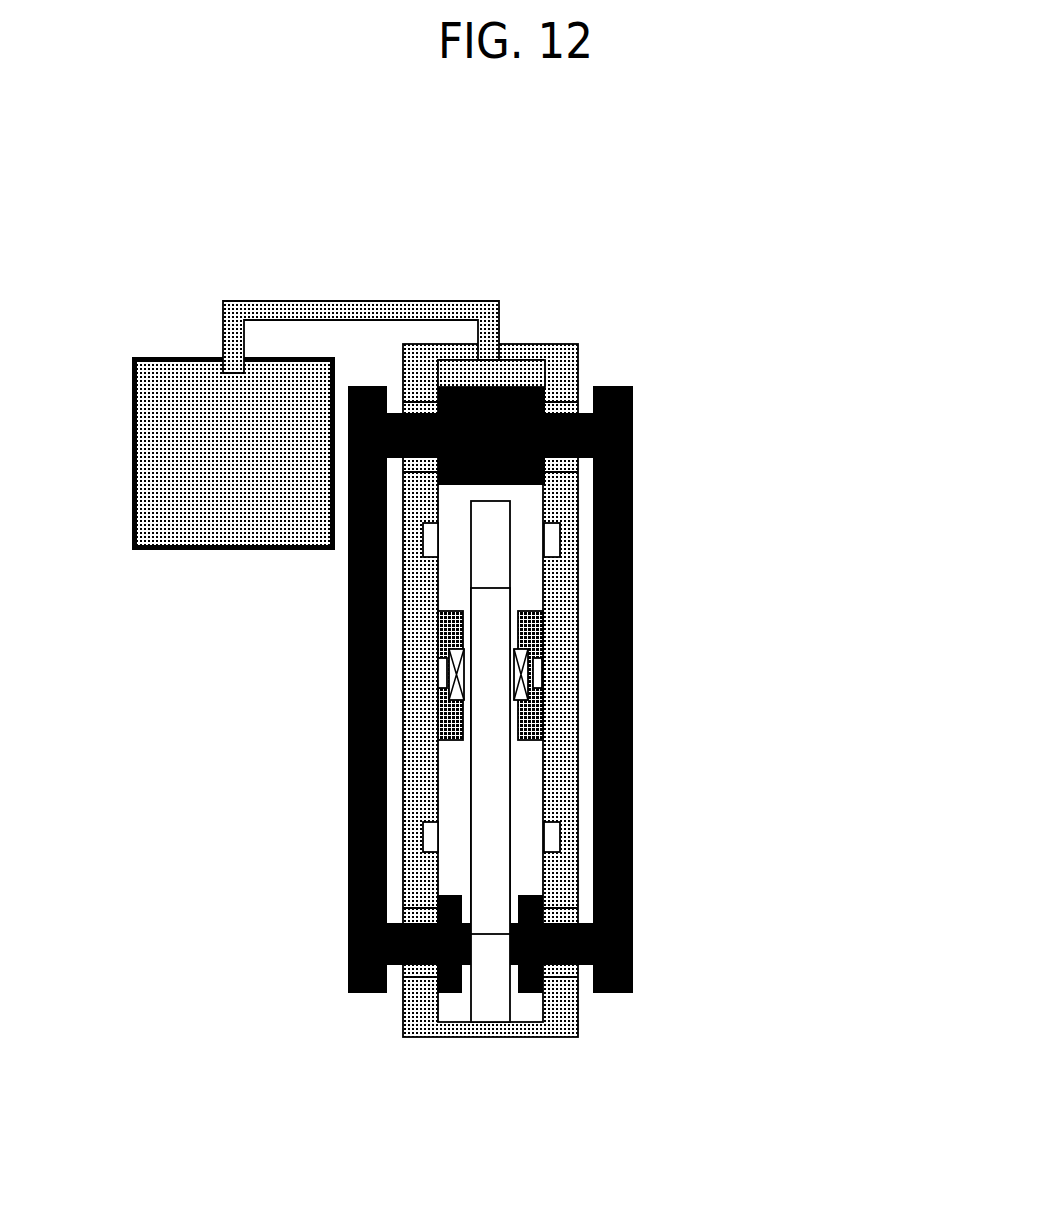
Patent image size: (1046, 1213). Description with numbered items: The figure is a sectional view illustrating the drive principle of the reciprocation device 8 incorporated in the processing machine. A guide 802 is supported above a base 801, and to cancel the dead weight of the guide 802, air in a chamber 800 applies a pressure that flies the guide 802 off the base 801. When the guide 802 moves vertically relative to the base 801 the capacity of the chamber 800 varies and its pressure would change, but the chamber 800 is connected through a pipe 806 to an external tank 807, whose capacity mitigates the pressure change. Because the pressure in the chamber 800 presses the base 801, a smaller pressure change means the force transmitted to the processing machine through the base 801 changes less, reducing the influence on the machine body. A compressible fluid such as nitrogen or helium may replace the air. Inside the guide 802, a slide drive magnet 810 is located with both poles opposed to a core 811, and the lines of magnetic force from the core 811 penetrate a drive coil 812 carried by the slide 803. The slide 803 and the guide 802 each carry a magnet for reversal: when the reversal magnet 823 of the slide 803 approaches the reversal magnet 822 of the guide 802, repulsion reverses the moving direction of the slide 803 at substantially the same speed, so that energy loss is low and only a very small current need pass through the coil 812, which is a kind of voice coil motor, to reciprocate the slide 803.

The reciprocation device 8 is at (522, 237).
The chamber 800 is at (502, 372).
The base 801 is at (632, 433).
The guide 802 is at (558, 507).
The slide 803 is at (533, 743).
The pipe 806 is at (343, 300).
The external tank 807 is at (193, 480).
The slide drive magnet 810 is at (497, 962).
The core 811 is at (494, 743).
The drive coil 812 is at (528, 655).
The reversal magnet of the guide 822 is at (553, 541).
The reversal magnet of the slide 823 is at (543, 679).